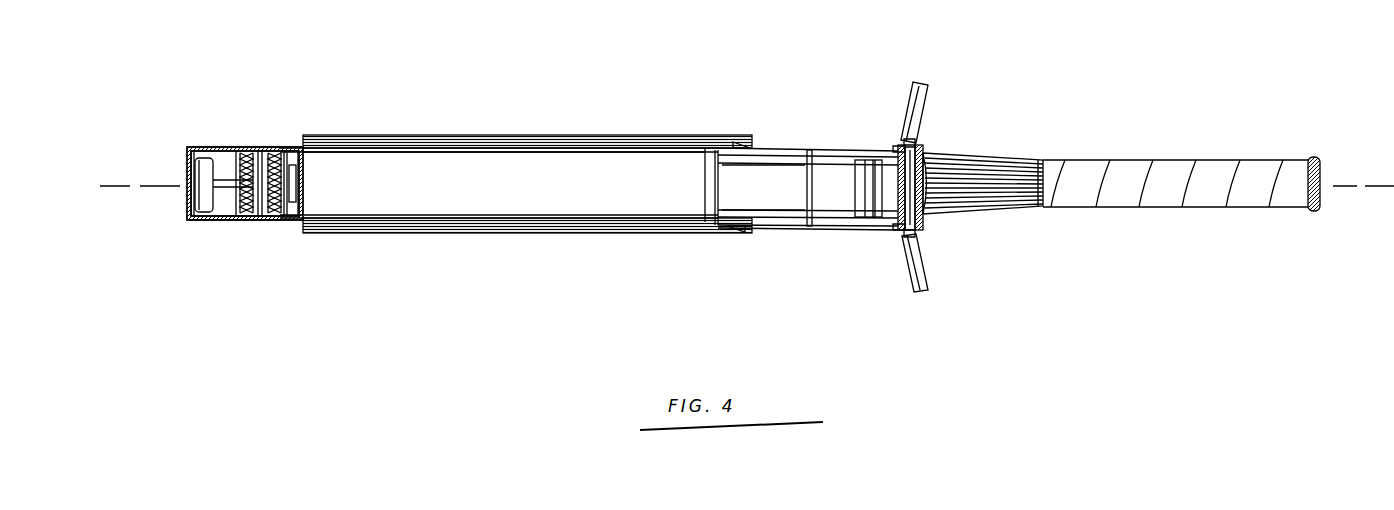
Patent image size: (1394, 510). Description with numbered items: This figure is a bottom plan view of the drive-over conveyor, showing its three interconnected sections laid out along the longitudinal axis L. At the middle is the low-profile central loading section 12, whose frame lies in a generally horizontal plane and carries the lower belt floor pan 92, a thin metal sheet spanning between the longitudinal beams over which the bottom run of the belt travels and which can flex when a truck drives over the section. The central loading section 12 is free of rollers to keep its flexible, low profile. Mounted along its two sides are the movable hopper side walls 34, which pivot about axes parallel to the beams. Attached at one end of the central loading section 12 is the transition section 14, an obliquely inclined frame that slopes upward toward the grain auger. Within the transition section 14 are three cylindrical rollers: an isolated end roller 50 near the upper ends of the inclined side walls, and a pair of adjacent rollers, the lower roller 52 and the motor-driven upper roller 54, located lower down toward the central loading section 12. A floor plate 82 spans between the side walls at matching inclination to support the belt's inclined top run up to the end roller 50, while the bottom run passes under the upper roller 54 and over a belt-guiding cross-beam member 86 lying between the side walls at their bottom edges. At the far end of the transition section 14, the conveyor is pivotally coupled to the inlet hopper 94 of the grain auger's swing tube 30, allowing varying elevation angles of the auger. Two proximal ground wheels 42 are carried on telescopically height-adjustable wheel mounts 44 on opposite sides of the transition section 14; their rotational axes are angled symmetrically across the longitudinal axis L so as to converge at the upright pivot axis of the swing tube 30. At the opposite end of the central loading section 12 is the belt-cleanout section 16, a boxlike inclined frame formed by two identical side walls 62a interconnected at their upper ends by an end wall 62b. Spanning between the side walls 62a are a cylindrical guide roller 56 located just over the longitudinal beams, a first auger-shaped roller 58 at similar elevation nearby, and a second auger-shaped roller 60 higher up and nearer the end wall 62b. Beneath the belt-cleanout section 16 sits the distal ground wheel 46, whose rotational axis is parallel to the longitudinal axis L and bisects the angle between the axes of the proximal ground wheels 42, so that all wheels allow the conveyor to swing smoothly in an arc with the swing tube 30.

The central loading section 12 is at (536, 132).
The transition section 14 is at (795, 135).
The belt-cleanout section 16 is at (260, 237).
The swing tube 30 is at (1178, 147).
The hopper side walls 34 is at (450, 136).
The proximal ground wheels 42 is at (921, 92).
The telescopically height-adjustable wheel mounts 44 is at (902, 152).
The distal ground wheel 46 is at (198, 192).
The isolated end roller 50 is at (907, 172).
The lower roller 52 is at (875, 205).
The upper roller 54 is at (858, 203).
The guide roller 56 is at (292, 188).
The first auger-shaped roller 58 is at (270, 153).
The second auger-shaped roller 60 is at (244, 152).
The side walls 62a is at (238, 147).
The end wall 62b is at (189, 158).
The floor plate 82 is at (770, 200).
The belt-guiding cross-beam member 86 is at (808, 205).
The lower belt floor pan 92 is at (588, 162).
The inlet hopper 94 is at (975, 165).
The longitudinal axis L is at (1343, 183).